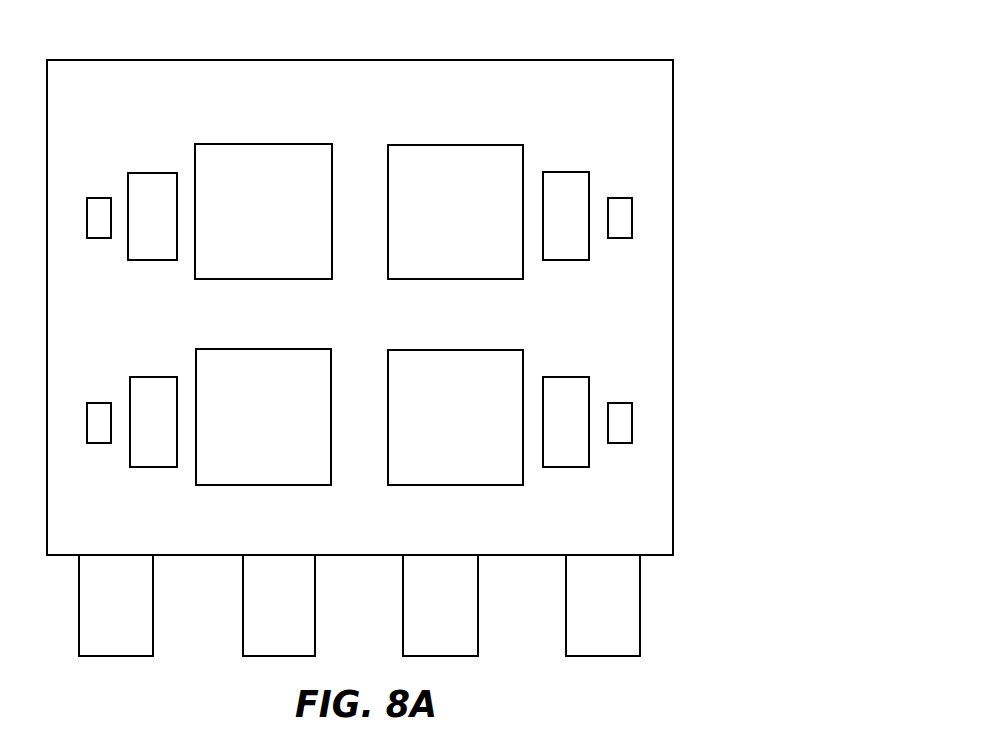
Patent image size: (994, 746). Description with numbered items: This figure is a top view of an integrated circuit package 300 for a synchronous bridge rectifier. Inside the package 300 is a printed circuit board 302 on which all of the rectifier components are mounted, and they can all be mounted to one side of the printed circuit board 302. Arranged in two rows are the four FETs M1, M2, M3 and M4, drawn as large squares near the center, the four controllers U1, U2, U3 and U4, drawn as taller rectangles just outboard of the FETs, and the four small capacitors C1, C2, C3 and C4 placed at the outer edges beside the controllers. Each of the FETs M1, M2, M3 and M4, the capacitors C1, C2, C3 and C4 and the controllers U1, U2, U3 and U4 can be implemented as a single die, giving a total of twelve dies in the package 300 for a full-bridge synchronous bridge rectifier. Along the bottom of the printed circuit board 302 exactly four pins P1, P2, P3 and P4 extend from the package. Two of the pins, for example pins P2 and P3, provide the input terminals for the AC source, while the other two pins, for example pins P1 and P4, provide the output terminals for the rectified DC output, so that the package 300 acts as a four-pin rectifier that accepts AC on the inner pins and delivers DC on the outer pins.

The integrated circuit package 300 is at (692, 51).
The printed circuit board 302 is at (647, 93).
The capacitor C1 is at (100, 198).
The capacitor C2 is at (621, 198).
The capacitor C3 is at (100, 403).
The capacitor C4 is at (621, 403).
The controller U1 is at (152, 216).
The controller U2 is at (566, 216).
The controller U3 is at (153, 422).
The controller U4 is at (566, 422).
The FET M1 is at (263, 211).
The FET M2 is at (455, 212).
The FET M3 is at (263, 417).
The FET M4 is at (455, 417).
The pin P1 is at (116, 606).
The pin P2 is at (279, 606).
The pin P3 is at (440, 606).
The pin P4 is at (603, 606).